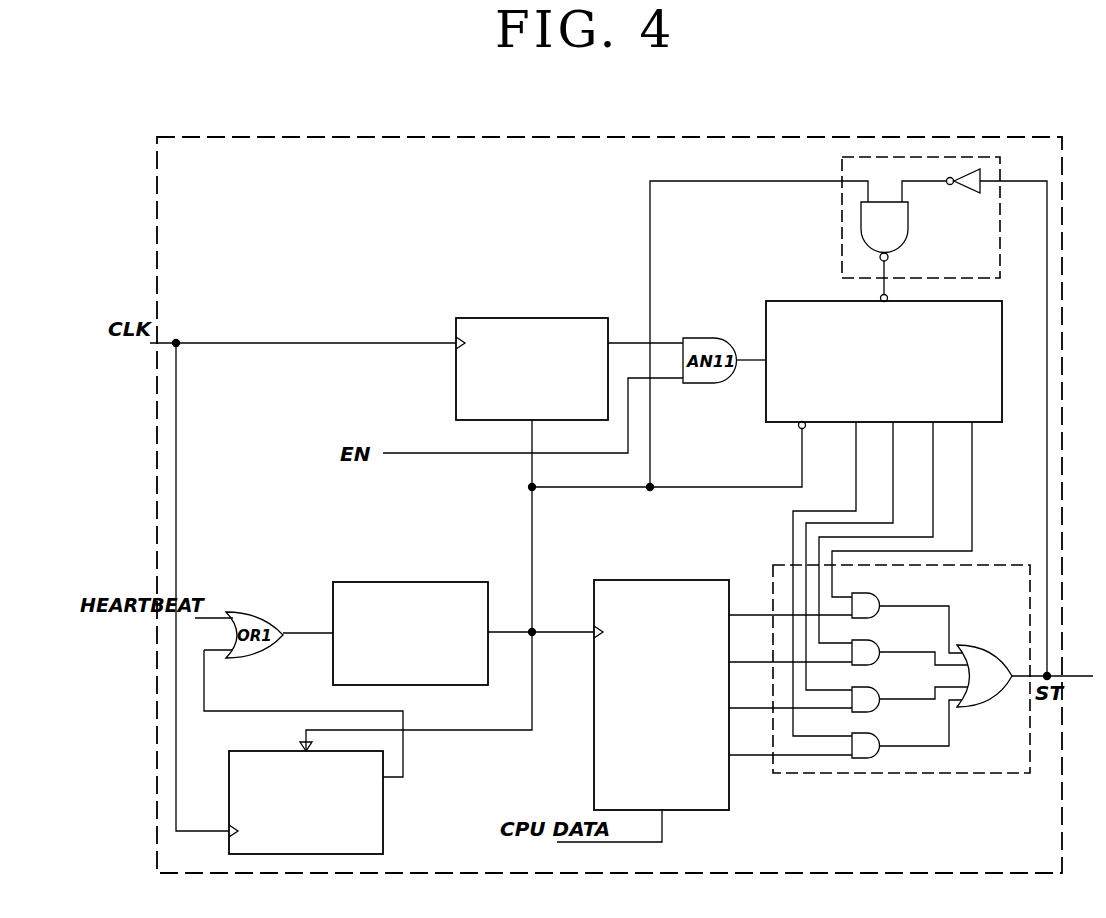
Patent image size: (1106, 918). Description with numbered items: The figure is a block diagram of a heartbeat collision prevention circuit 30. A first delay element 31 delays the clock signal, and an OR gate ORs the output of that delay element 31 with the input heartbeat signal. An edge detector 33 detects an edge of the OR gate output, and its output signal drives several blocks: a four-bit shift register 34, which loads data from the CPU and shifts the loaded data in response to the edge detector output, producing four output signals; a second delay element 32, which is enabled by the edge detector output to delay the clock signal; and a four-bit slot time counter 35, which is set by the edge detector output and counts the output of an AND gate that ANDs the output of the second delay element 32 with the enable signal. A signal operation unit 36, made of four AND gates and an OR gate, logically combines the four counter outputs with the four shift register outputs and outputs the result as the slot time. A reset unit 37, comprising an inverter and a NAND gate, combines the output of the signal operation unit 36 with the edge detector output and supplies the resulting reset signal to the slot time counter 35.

The heartbeat collision prevention circuit 30 is at (249, 137).
The delay element 31 is at (384, 826).
The delay element 32 is at (550, 317).
The edge detector 33 is at (430, 581).
The 4-bit shift register 34 is at (600, 777).
The 4-bit slot time counter 35 is at (784, 302).
The signal operation unit 36 is at (1005, 565).
The reset unit 37 is at (957, 157).